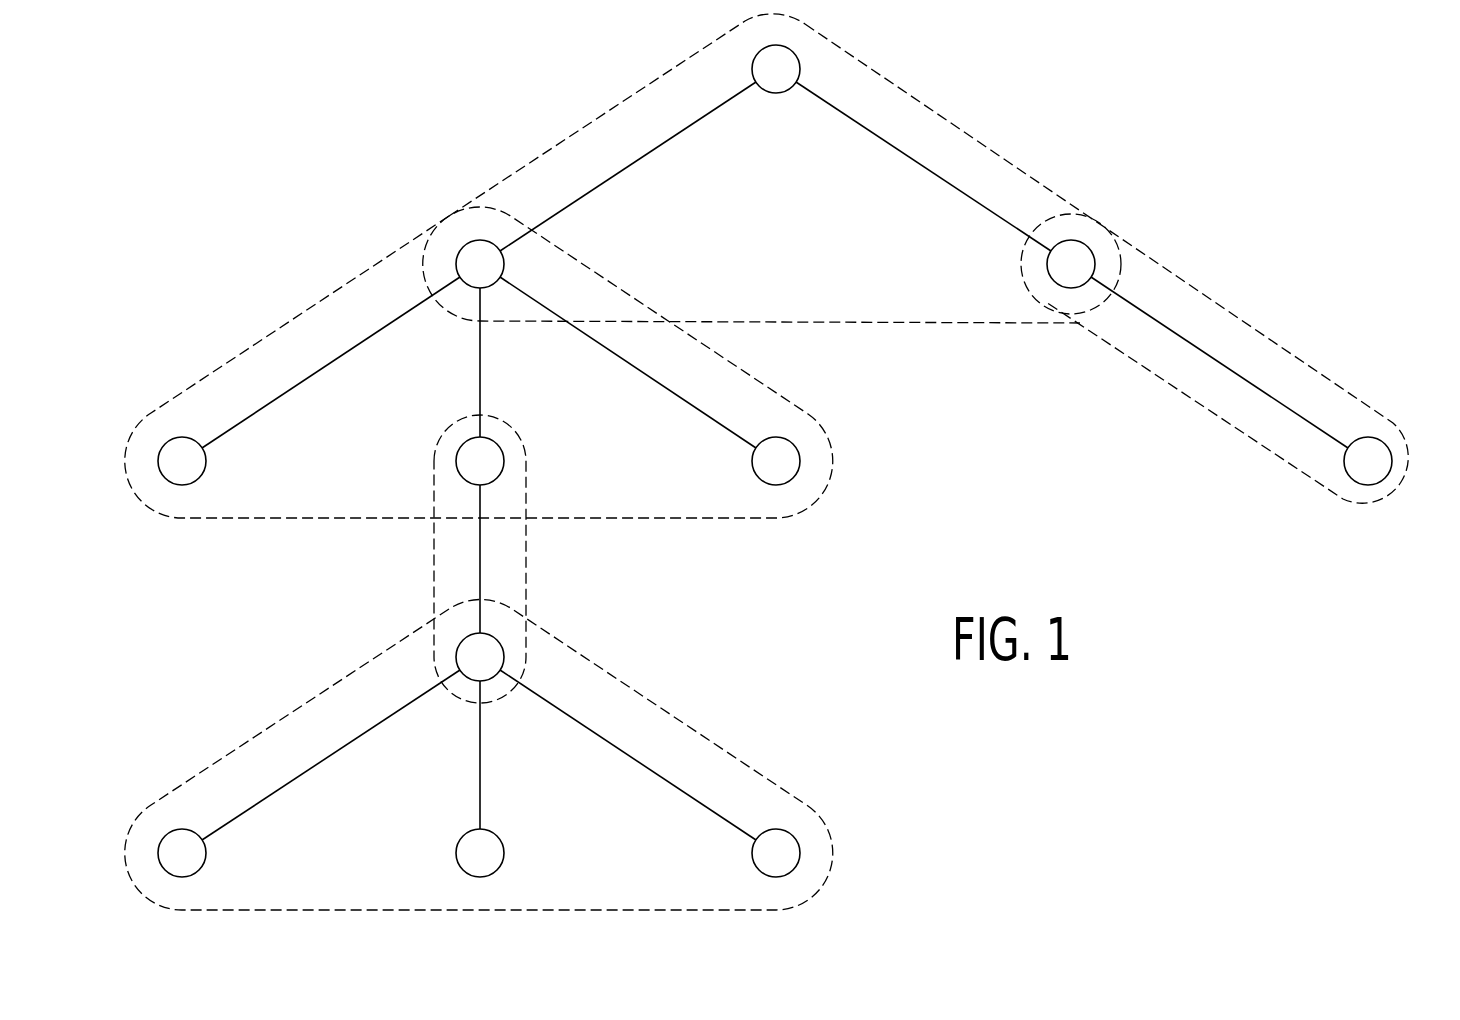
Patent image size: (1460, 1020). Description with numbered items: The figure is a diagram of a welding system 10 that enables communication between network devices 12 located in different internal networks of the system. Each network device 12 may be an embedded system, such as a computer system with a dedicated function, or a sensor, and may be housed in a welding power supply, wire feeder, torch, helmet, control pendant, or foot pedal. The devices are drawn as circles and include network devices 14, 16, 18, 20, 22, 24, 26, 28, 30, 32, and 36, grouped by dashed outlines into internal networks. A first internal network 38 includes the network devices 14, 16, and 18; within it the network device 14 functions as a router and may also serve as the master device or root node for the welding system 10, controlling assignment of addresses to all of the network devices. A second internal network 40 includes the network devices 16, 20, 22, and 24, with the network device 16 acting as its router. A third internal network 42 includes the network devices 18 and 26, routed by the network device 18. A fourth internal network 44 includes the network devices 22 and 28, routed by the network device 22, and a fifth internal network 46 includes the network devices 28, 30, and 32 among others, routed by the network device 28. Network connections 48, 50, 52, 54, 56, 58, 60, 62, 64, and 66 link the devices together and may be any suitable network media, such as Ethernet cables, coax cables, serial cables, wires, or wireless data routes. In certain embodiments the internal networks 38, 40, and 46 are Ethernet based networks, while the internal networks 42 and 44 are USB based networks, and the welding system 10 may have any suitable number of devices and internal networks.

The welding system 10 is at (203, 90).
The network devices 12 is at (758, 456).
The network device 14 is at (794, 50).
The network device 16 is at (463, 245).
The network device 18 is at (1092, 246).
The network device 20 is at (165, 444).
The network device 22 is at (463, 478).
The network device 24 is at (793, 444).
The network device 26 is at (1387, 443).
The network device 28 is at (463, 640).
The network device 30 is at (165, 836).
The network device 32 is at (463, 870).
The network device 36 is at (798, 833).
The first internal network 38 is at (587, 127).
The second internal network 40 is at (295, 322).
The third internal network 42 is at (1250, 328).
The fourth internal network 44 is at (525, 558).
The fifth internal network 46 is at (667, 715).
The network connection 48 is at (630, 168).
The network connection 50 is at (922, 168).
The network connection 52 is at (332, 363).
The network connection 54 is at (480, 360).
The network connection 56 is at (627, 363).
The network connection 58 is at (1217, 365).
The network connection 60 is at (477, 557).
The network connection 62 is at (330, 753).
The network connection 64 is at (477, 745).
The network connection 66 is at (627, 755).